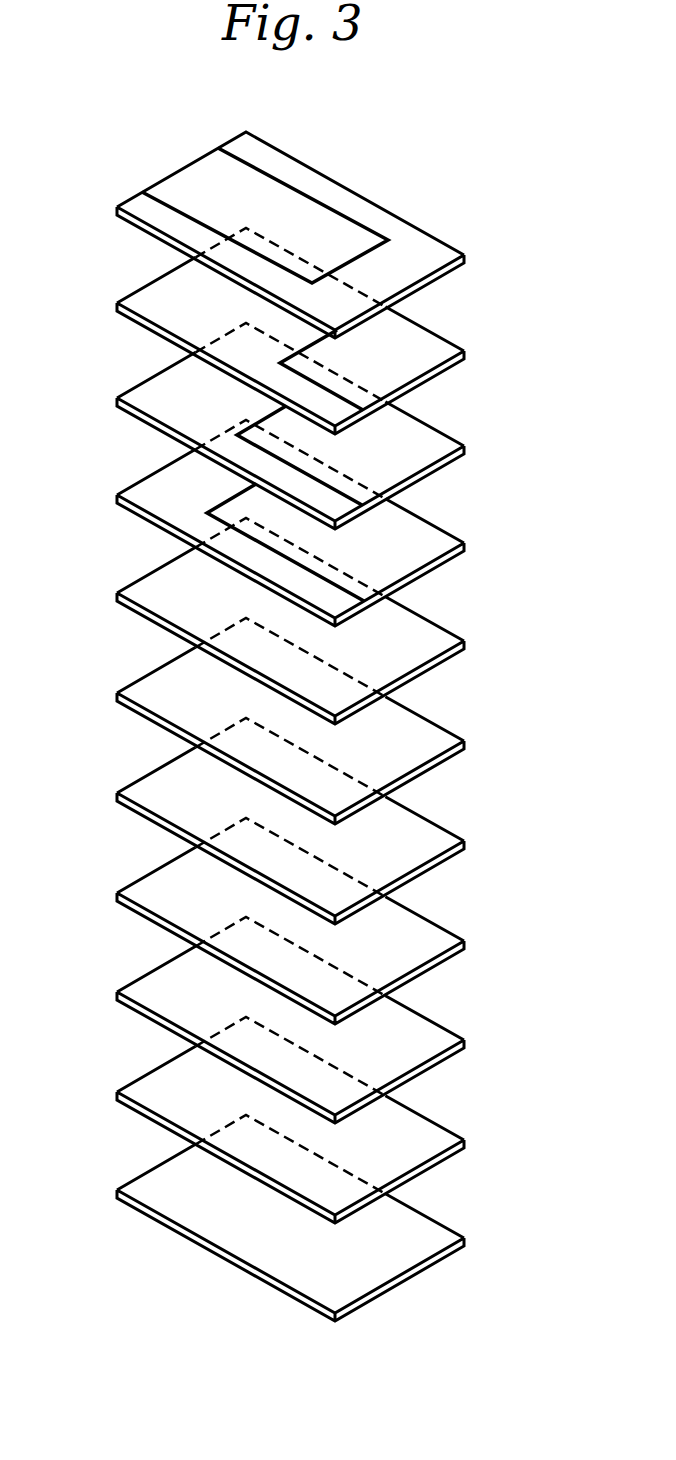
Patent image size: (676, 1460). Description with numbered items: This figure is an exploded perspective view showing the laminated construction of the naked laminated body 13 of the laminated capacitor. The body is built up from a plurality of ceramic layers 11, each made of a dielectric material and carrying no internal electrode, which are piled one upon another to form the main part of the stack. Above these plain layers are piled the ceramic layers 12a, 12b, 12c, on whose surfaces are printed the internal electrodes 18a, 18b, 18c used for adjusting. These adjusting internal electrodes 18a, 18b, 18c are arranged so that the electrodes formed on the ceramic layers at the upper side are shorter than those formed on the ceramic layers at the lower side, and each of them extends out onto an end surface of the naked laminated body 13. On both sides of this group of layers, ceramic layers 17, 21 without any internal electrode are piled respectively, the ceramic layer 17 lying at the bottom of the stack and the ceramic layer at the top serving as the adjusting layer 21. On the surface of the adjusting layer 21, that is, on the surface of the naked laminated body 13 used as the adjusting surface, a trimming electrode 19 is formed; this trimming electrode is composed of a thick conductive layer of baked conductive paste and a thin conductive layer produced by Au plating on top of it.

The naked laminated body 13 is at (558, 785).
The adjusting layer 21 is at (151, 211).
The trimming electrode 19 is at (322, 220).
The ceramic layer 12a is at (153, 327).
The ceramic layer 12b is at (153, 422).
The ceramic layer 12c is at (153, 519).
The internal electrode for adjusting 18a is at (383, 368).
The internal electrode for adjusting 18b is at (385, 467).
The internal electrode for adjusting 18c is at (385, 563).
The ceramic layer 11 is at (158, 614).
The ceramic layer 17 is at (170, 1197).